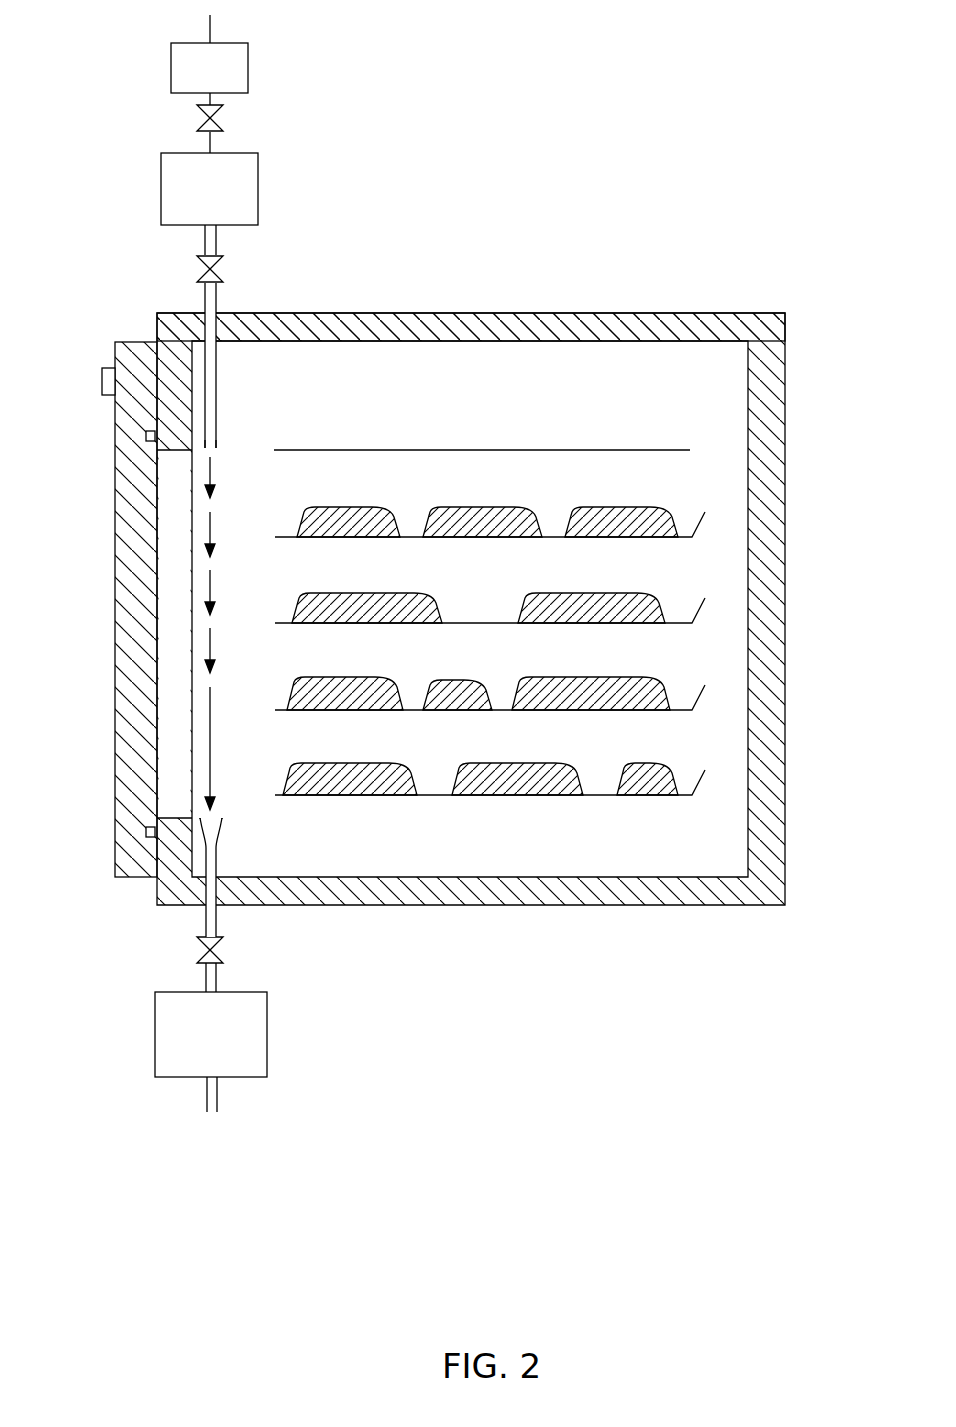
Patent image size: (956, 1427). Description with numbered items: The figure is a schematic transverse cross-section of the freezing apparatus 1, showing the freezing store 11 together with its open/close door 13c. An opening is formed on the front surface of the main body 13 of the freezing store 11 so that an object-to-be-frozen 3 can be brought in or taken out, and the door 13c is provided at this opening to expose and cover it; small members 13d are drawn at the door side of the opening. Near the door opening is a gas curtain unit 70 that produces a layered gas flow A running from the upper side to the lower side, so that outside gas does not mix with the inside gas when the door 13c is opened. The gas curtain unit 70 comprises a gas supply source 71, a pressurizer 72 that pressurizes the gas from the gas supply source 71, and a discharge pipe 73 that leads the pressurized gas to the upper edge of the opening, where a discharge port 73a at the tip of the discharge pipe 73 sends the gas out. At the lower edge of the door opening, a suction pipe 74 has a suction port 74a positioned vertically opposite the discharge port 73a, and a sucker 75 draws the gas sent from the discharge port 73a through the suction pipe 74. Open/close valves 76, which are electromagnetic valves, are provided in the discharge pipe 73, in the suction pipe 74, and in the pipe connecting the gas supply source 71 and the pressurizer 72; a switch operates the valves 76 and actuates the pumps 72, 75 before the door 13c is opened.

The freezing apparatus 1 is at (733, 240).
The object-to-be-frozen 3 is at (527, 797).
The freezing store 11 is at (786, 480).
The main body 13 is at (505, 313).
The open/close door 13c is at (114, 604).
The seal member 13d is at (146, 434).
The gas curtain unit 70 is at (292, 192).
The gas supply source 71 is at (248, 55).
The pressurizer 72 is at (228, 153).
The discharge pipe 73 is at (216, 302).
The discharge port 73a is at (212, 452).
The suction pipe 74 is at (218, 918).
The suction port 74a is at (210, 814).
The sucker 75 is at (267, 1057).
The open/close valve 76 is at (222, 112).
The gas flow A is at (212, 640).